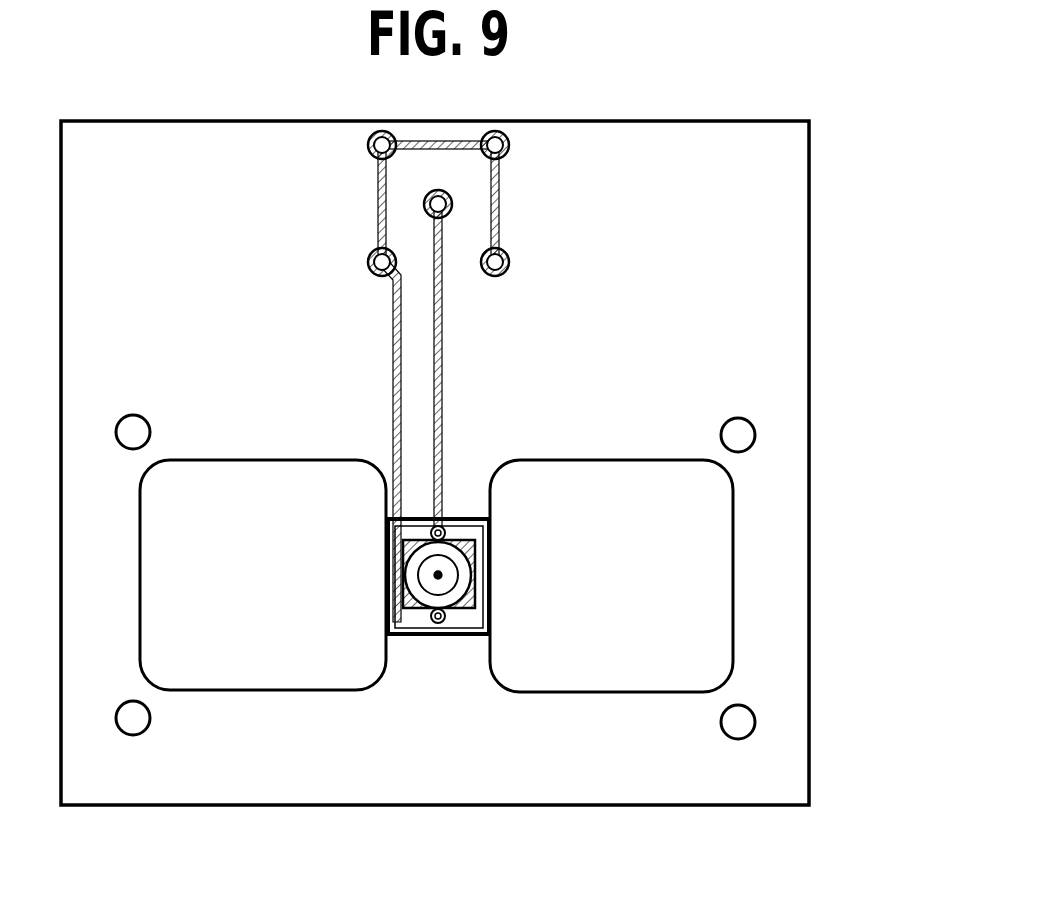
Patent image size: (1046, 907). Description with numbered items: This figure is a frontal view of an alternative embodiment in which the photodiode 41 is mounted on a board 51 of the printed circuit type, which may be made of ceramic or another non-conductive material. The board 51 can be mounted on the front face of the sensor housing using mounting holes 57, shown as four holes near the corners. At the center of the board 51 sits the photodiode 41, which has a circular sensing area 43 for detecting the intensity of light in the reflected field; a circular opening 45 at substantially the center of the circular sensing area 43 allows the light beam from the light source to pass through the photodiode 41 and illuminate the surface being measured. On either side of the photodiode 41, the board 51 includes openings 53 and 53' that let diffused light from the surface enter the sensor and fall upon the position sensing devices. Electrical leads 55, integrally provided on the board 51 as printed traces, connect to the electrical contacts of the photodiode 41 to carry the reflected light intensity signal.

The photodiode 41 is at (451, 641).
The circular sensing area 43 is at (489, 636).
The circular opening 45 is at (438, 578).
The board 51 is at (781, 334).
The opening 53 is at (611, 676).
The opening 53' is at (263, 675).
The electrical leads 55 is at (452, 231).
The mounting holes 57 is at (761, 441).